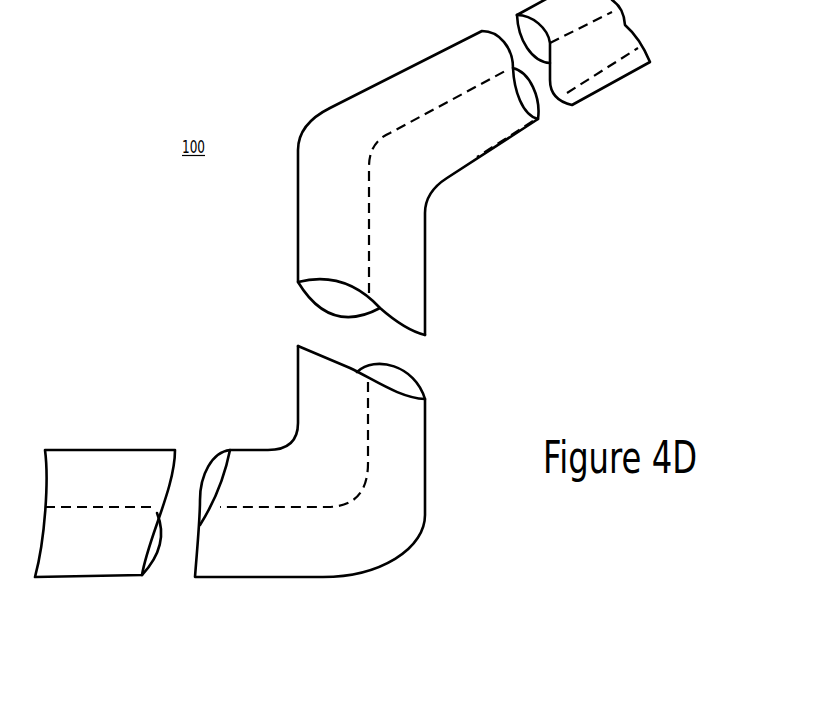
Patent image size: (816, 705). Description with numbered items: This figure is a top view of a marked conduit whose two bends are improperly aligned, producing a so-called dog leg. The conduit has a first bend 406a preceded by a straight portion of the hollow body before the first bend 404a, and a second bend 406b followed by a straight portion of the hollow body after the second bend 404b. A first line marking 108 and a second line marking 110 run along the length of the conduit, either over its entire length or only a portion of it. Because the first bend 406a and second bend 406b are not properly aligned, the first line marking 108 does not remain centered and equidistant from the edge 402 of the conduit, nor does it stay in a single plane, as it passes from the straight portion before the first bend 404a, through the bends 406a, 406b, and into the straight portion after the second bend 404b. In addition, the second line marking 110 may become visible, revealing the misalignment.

The first line marking 108 is at (369, 225).
The second line marking 110 is at (600, 72).
The edge 402 is at (120, 448).
The straight portion of the hollow body before the first bend 404a is at (100, 596).
The straight portion of the hollow body after the second bend 404b is at (511, 177).
The first bend 406a is at (420, 581).
The second bend 406b is at (303, 113).